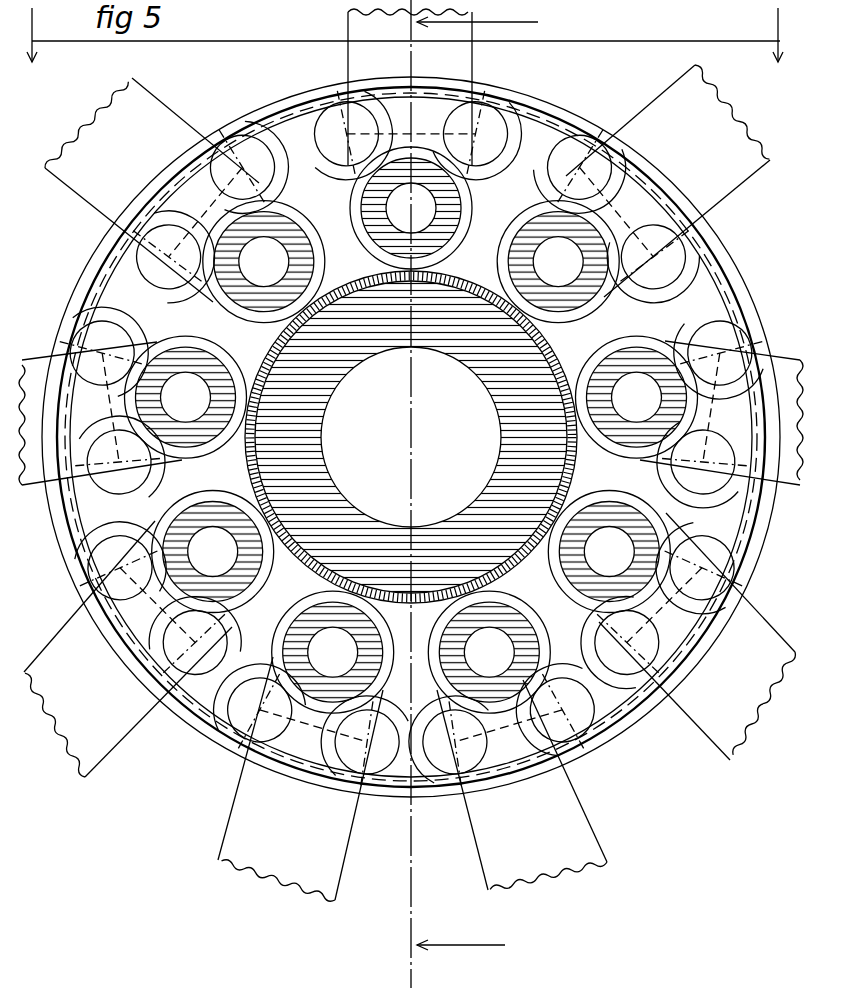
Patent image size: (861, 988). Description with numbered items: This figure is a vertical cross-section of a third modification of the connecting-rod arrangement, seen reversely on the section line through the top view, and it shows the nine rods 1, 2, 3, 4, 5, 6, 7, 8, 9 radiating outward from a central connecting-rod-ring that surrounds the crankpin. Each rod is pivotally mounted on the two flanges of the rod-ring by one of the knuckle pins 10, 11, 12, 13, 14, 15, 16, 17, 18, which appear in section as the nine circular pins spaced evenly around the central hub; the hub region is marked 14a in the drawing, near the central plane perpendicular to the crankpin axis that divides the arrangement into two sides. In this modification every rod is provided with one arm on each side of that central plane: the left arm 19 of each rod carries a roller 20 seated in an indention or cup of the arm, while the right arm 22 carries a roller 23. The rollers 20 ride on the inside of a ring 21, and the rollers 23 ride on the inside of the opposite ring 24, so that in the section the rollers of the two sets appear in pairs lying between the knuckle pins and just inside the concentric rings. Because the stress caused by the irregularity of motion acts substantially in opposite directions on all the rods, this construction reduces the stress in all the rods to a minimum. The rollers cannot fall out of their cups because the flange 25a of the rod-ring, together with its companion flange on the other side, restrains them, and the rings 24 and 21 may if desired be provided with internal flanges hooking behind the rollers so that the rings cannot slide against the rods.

The rod 1 is at (410, 87).
The rod 2 is at (669, 180).
The rod 3 is at (721, 413).
The rod 4 is at (698, 636).
The rod 5 is at (522, 786).
The rod 6 is at (405, 448).
The rod 7 is at (318, 494).
The rod 8 is at (98, 414).
The rod 9 is at (151, 190).
The knuckle pin 10 is at (471, 205).
The knuckle pin 11 is at (500, 260).
The knuckle pin 12 is at (603, 360).
The knuckle pin 13 is at (600, 503).
The knuckle pin 14 is at (500, 608).
The central hub 14a is at (482, 372).
The knuckle pin 15 is at (383, 632).
The knuckle pin 16 is at (258, 561).
The knuckle pin 17 is at (222, 435).
The knuckle pin 18 is at (261, 305).
The left arm 19 is at (323, 167).
The roller 20 is at (548, 172).
The ring 21 is at (290, 100).
The right arm 22 is at (547, 92).
The roller 23 is at (232, 147).
The ring 24 is at (313, 90).
The flange 25a is at (413, 108).